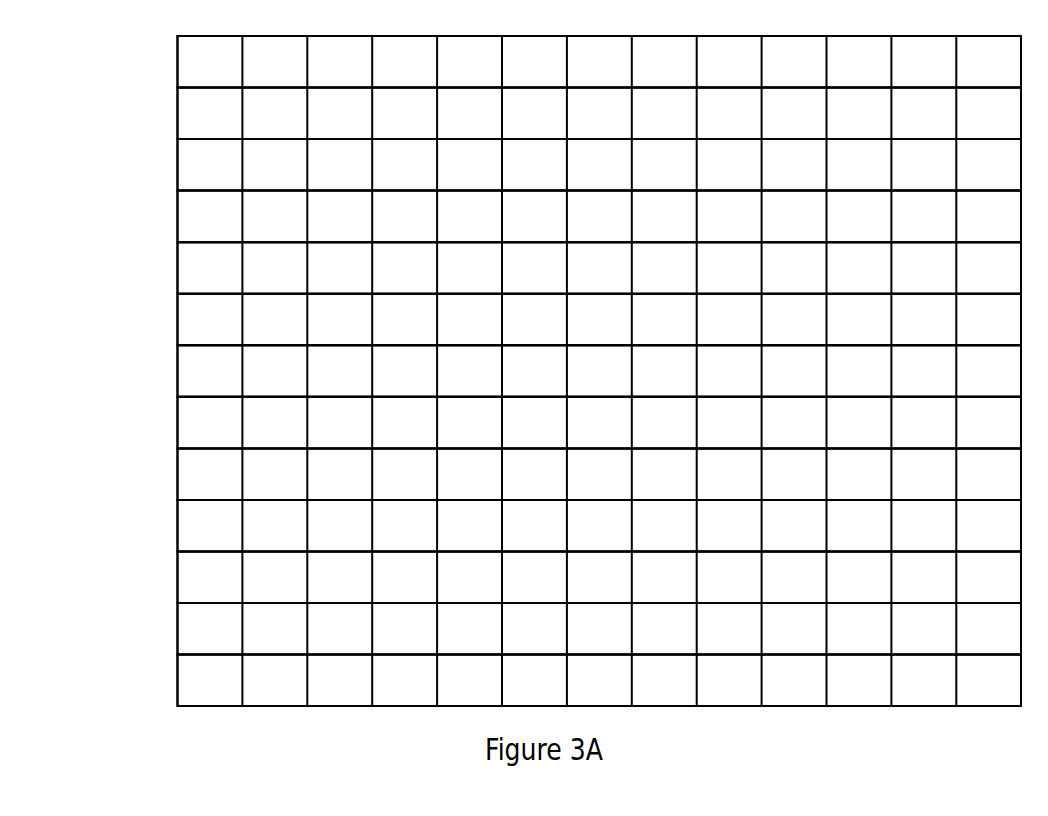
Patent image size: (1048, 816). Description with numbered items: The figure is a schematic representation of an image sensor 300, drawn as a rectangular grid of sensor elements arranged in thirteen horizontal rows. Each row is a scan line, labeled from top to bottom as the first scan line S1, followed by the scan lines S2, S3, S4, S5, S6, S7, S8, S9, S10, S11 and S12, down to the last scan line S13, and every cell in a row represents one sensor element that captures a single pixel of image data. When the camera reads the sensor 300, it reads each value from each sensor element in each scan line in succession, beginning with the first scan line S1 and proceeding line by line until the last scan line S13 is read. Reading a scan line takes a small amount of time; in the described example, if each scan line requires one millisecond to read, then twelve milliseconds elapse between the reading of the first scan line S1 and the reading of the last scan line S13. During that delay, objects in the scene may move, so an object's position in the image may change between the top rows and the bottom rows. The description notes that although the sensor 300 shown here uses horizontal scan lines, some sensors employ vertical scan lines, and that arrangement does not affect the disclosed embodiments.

The image sensor 300 is at (96, 93).
The first scan line S1 is at (572, 62).
The second scan line S2 is at (572, 114).
The third scan line S3 is at (572, 165).
The fourth scan line S4 is at (572, 217).
The fifth scan line S5 is at (572, 268).
The sixth scan line S6 is at (572, 320).
The seventh scan line S7 is at (572, 371).
The eighth scan line S8 is at (572, 423).
The ninth scan line S9 is at (572, 474).
The tenth scan line S10 is at (572, 526).
The eleventh scan line S11 is at (572, 578).
The twelfth scan line S12 is at (572, 629).
The last scan line S13 is at (572, 681).